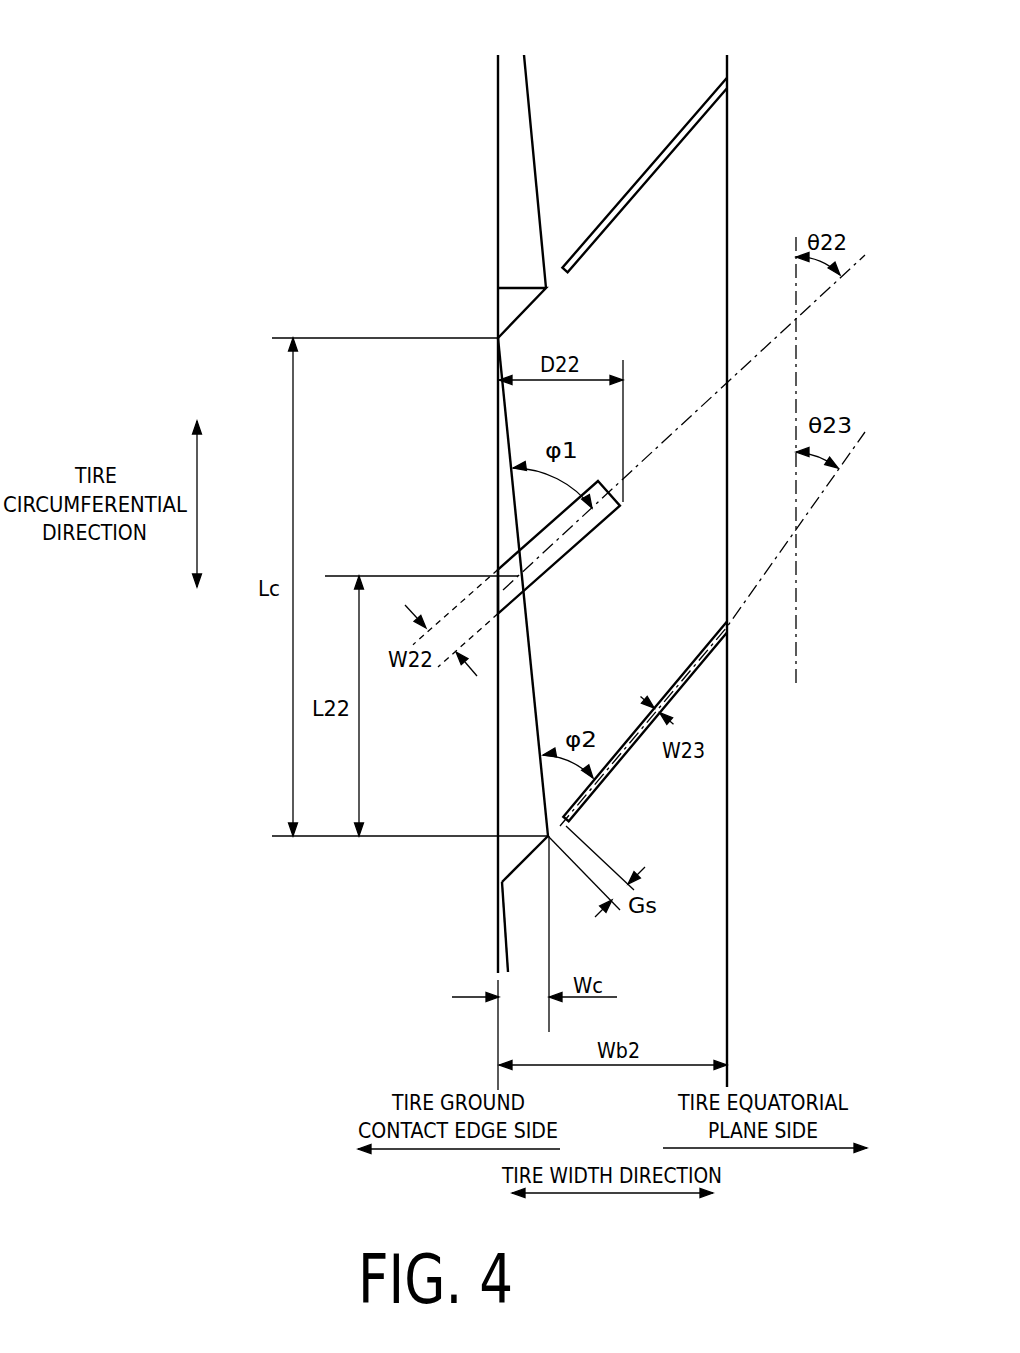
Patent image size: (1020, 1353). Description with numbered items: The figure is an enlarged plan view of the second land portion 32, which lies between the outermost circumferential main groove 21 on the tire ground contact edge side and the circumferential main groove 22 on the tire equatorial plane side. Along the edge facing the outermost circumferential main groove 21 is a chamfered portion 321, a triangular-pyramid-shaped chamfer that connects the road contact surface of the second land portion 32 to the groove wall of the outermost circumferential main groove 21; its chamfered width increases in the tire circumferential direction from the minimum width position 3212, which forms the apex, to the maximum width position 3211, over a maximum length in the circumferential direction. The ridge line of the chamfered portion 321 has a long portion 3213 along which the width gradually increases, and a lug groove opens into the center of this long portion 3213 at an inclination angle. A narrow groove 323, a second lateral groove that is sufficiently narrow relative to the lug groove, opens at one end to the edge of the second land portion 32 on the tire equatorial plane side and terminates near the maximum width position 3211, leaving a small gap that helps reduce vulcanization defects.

The outermost circumferential main groove 21 is at (458, 75).
The circumferential main groove 22 is at (758, 75).
The second land portion 32 is at (611, 49).
The chamfered portion 321 is at (520, 133).
The maximum width position 3211 is at (548, 837).
The minimum width position 3212 is at (497, 337).
The long portion 3213 is at (519, 553).
The narrow groove 323 is at (683, 137).